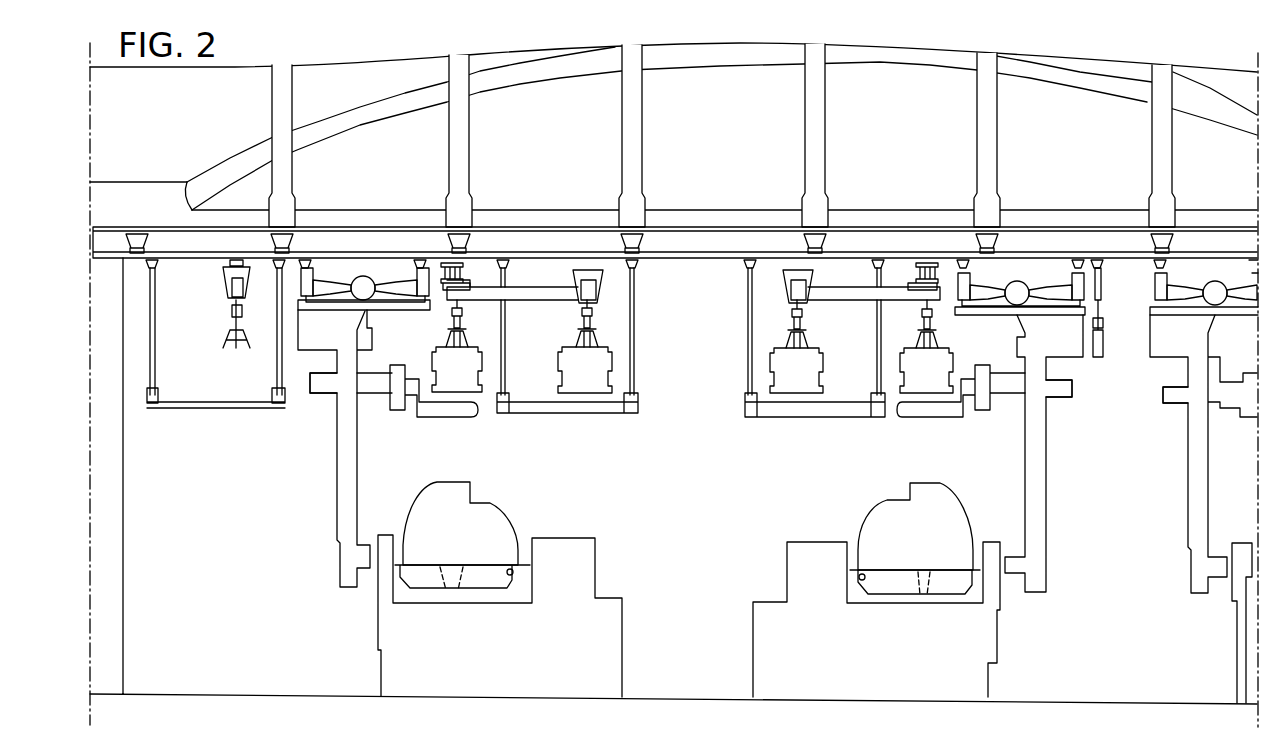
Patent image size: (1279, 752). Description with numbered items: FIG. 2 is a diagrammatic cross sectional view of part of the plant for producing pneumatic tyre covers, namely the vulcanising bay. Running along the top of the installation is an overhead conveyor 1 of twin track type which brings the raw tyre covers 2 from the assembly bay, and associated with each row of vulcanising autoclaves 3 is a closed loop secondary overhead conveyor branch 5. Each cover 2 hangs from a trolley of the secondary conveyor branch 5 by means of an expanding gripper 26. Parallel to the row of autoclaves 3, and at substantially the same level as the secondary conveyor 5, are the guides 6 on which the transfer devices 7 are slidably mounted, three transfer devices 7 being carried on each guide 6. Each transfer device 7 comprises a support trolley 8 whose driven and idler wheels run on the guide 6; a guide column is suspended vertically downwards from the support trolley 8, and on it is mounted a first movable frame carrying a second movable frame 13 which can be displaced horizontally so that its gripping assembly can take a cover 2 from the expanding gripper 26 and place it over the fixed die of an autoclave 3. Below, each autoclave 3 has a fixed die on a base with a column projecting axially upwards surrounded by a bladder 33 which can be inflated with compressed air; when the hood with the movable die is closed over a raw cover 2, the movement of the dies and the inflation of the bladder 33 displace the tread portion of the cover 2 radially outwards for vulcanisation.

The overhead conveyor 1 is at (587, 250).
The pneumatic tyre cover 2 is at (577, 377).
The vulcanising autoclave 3 is at (585, 518).
The secondary overhead conveyor branch 5 is at (467, 270).
The guide 6 is at (425, 258).
The transfer device 7 is at (305, 444).
The support trolley 8 is at (390, 308).
The second movable frame 13 is at (328, 383).
The expanding gripper 26 is at (478, 336).
The bladder 33 is at (445, 593).